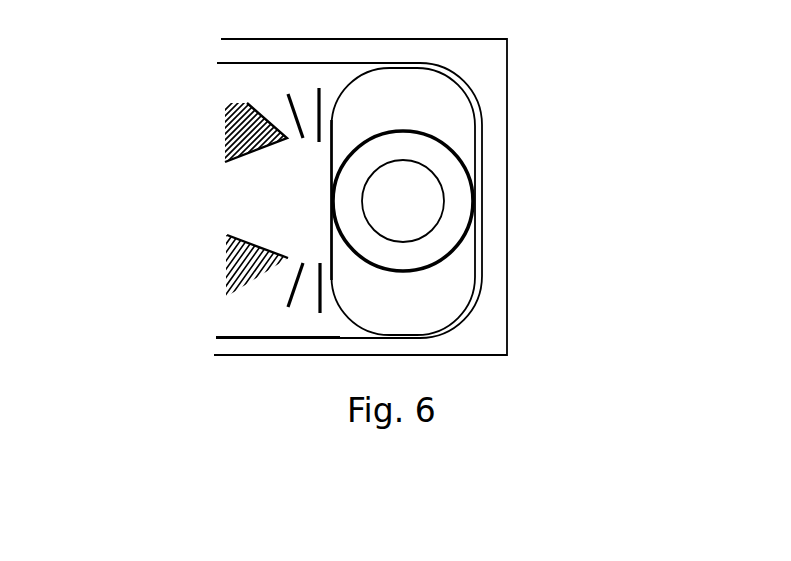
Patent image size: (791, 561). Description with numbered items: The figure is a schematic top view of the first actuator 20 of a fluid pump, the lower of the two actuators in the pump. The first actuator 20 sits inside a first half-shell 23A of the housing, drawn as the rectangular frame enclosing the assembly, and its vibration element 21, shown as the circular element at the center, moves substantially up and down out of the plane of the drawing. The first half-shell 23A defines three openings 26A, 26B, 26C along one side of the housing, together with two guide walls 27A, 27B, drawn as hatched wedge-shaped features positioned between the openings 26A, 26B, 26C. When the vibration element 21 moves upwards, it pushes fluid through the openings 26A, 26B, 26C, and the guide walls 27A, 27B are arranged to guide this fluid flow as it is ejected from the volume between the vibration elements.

The first actuator 20 is at (529, 253).
The vibration element 21 is at (415, 180).
The first half-shell 23A is at (495, 62).
The opening 26A is at (227, 78).
The opening 26B is at (243, 173).
The opening 26C is at (225, 315).
The guide wall 27A is at (228, 120).
The guide wall 27B is at (235, 260).